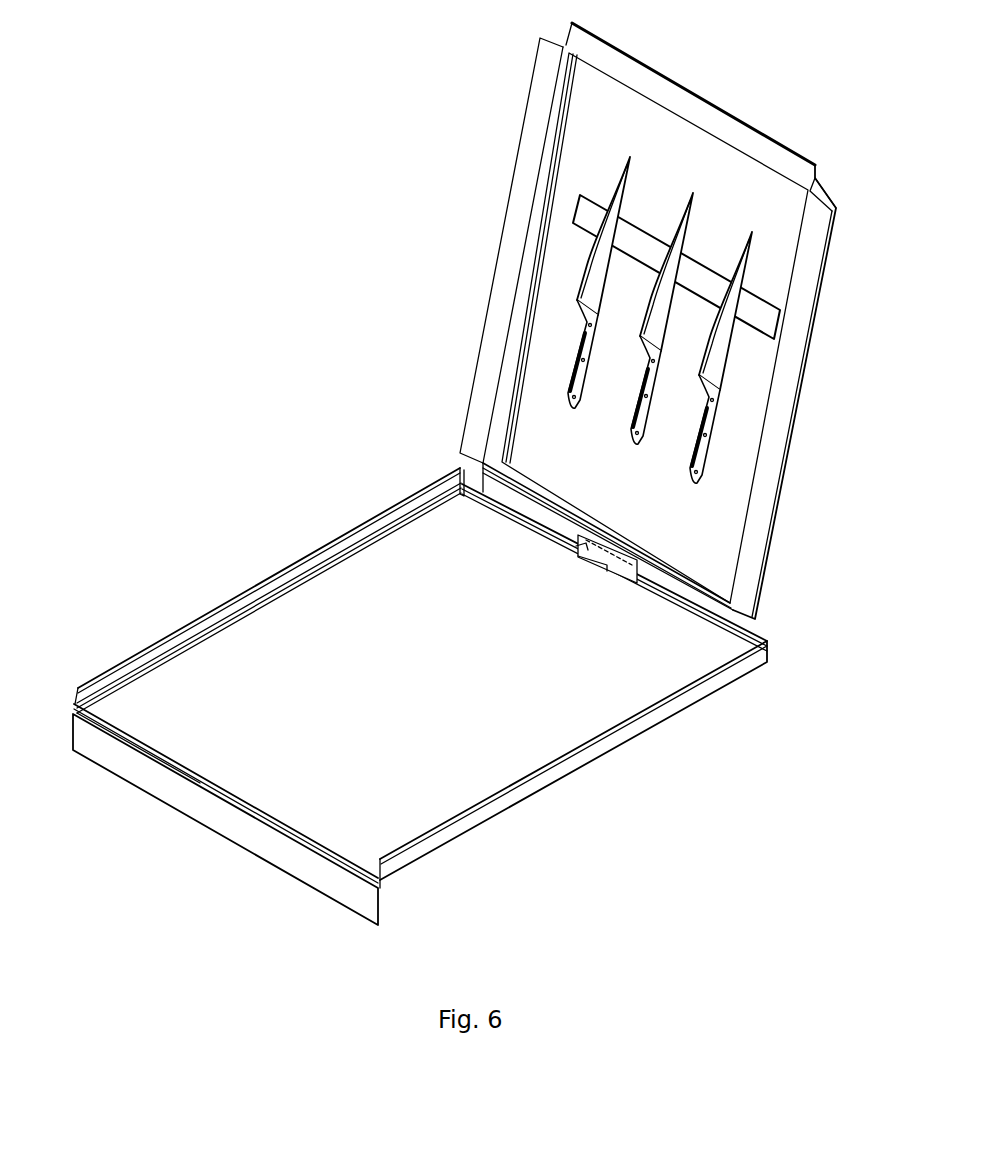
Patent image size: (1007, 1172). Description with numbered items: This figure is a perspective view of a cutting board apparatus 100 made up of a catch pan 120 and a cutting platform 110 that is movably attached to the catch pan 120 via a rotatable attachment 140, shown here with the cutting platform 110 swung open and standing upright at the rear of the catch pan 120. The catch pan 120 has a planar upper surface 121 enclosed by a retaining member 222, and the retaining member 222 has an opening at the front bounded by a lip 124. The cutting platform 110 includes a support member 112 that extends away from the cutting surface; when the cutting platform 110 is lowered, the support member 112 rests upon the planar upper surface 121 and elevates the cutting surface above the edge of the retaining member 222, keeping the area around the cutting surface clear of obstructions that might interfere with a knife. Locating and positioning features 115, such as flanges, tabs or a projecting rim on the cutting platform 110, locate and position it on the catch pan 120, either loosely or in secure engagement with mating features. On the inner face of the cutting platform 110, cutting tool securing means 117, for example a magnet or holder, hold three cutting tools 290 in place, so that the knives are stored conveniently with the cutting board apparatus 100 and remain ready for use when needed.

The cutting board apparatus 100 is at (165, 220).
The cutting platform 110 is at (833, 373).
The support member 112 is at (517, 333).
The locating and positioning features 115 is at (758, 130).
The cutting tool securing means 117 is at (580, 220).
The cutting tool 290 is at (562, 389).
The catch pan 120 is at (168, 545).
The planar upper surface 121 is at (450, 665).
The lip 124 is at (215, 813).
The rotatable attachment 140 is at (637, 583).
The retaining member 222 is at (565, 774).